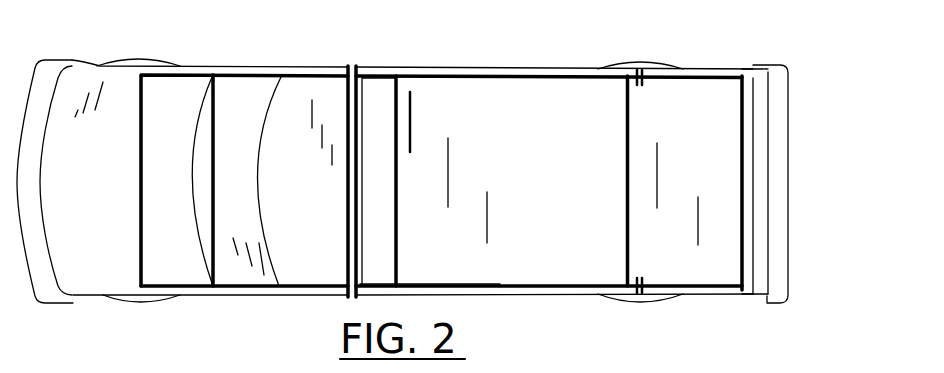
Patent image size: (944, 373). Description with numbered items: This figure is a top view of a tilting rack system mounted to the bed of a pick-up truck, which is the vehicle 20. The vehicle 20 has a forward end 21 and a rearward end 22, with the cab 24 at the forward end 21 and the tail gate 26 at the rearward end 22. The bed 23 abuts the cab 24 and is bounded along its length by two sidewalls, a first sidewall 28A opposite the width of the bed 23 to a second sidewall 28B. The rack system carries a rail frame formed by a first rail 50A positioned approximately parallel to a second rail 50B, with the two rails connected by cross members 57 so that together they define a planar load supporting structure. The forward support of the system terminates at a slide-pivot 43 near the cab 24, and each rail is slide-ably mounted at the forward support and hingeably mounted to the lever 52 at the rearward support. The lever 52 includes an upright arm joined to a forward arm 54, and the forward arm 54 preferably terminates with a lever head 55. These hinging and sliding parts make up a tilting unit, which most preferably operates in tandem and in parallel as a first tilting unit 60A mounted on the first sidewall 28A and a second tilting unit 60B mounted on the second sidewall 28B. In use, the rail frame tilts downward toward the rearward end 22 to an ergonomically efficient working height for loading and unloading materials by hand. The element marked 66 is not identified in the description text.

The vehicle 20 is at (322, 72).
The forward end 21 is at (85, 283).
The rearward end 22 is at (745, 292).
The bed 23 is at (578, 177).
The cab 24 is at (177, 273).
The tail gate 26 is at (763, 167).
The first sidewall 28A is at (605, 292).
The second sidewall 28B is at (527, 75).
The slide-pivot 43 is at (397, 75).
The first rail 50A is at (493, 288).
The second rail 50B is at (443, 75).
The lever 52 is at (743, 222).
The forward arm 54 is at (667, 290).
The lever head 55 is at (641, 70).
The cross members 57 is at (397, 212).
The first tilting unit 60A is at (753, 315).
The second tilting unit 60B is at (735, 54).
The hinge pin 66 is at (637, 68).